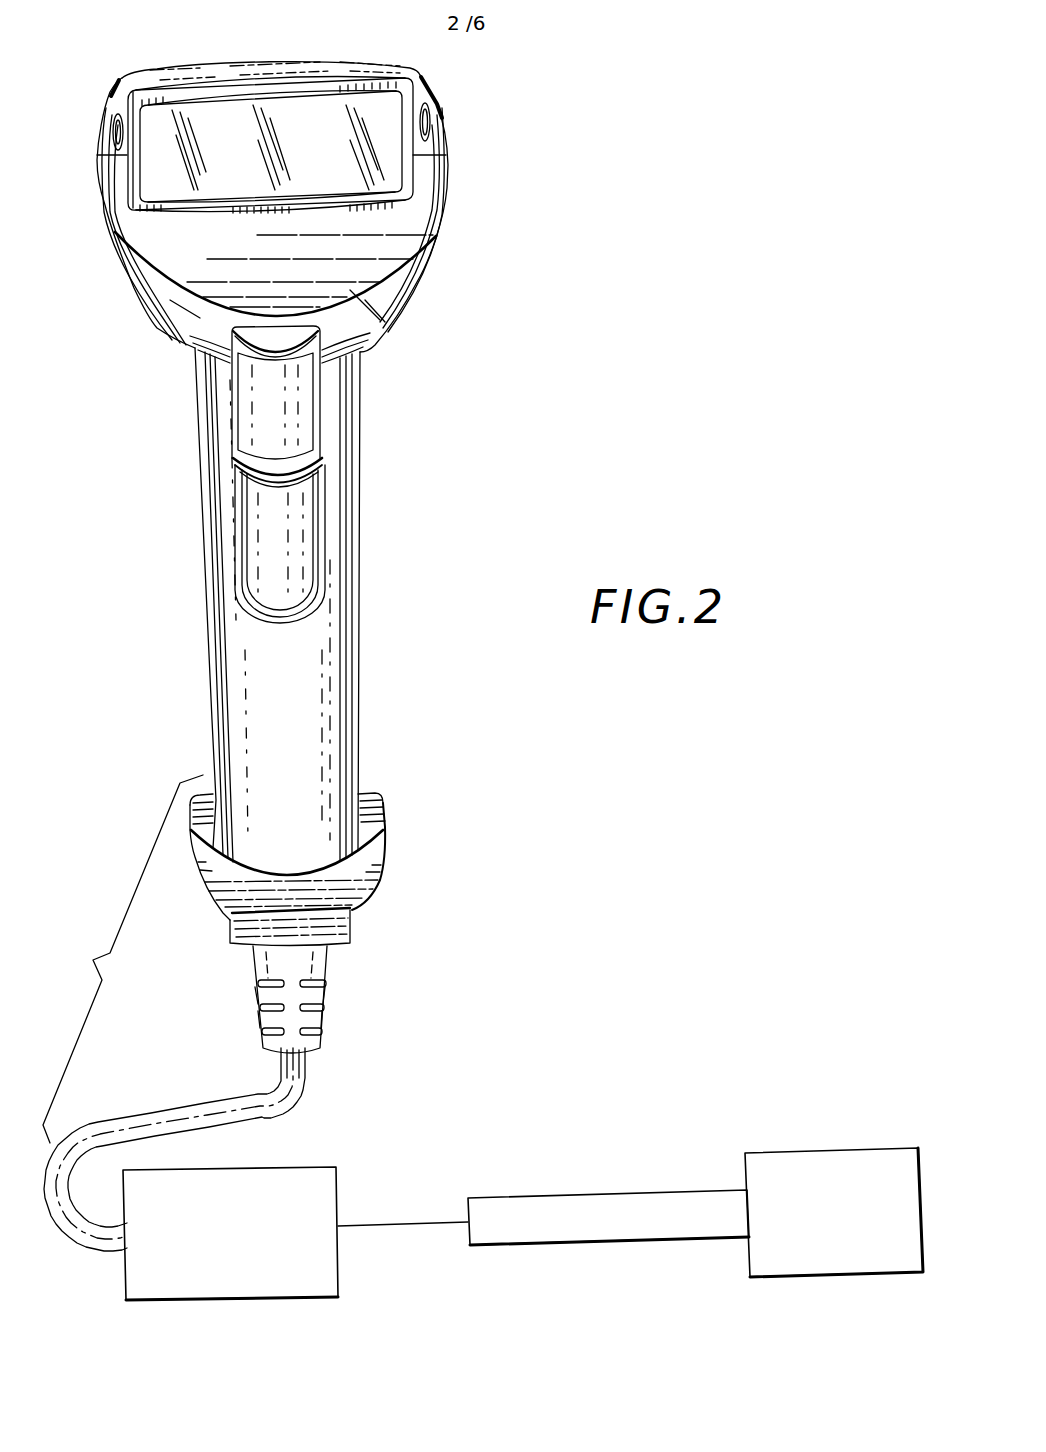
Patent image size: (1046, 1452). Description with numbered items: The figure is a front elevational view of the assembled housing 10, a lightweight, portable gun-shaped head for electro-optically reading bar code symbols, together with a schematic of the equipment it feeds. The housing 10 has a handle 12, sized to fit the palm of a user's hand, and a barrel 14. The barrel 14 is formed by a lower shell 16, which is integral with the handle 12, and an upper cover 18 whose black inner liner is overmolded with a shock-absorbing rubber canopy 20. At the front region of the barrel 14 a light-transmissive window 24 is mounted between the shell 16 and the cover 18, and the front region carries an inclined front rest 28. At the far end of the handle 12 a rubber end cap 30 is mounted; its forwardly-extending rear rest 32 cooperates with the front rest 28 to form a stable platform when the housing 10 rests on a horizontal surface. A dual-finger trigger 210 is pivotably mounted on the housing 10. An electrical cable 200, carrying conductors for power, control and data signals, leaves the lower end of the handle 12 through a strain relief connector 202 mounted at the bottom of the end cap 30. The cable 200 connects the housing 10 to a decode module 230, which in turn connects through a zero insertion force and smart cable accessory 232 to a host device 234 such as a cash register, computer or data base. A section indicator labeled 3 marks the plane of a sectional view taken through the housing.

The section line 3- 3 is at (266, 8).
The housing 10 is at (483, 121).
The handle 12 is at (372, 697).
The barrel 14 is at (458, 199).
The shell 16 is at (433, 255).
The cover 18 is at (452, 90).
The canopy 20 is at (356, 66).
The window 24 is at (309, 156).
The front rest 28 is at (187, 270).
The end cap 30 is at (184, 836).
The rear rest 32 is at (240, 940).
The electrical cable 200 is at (303, 1068).
The strain relief connector 202 is at (327, 1003).
The trigger 210 is at (290, 572).
The decode module 230 is at (340, 1213).
The smart cable accessory 232 is at (689, 1192).
The host device 234 is at (841, 1151).